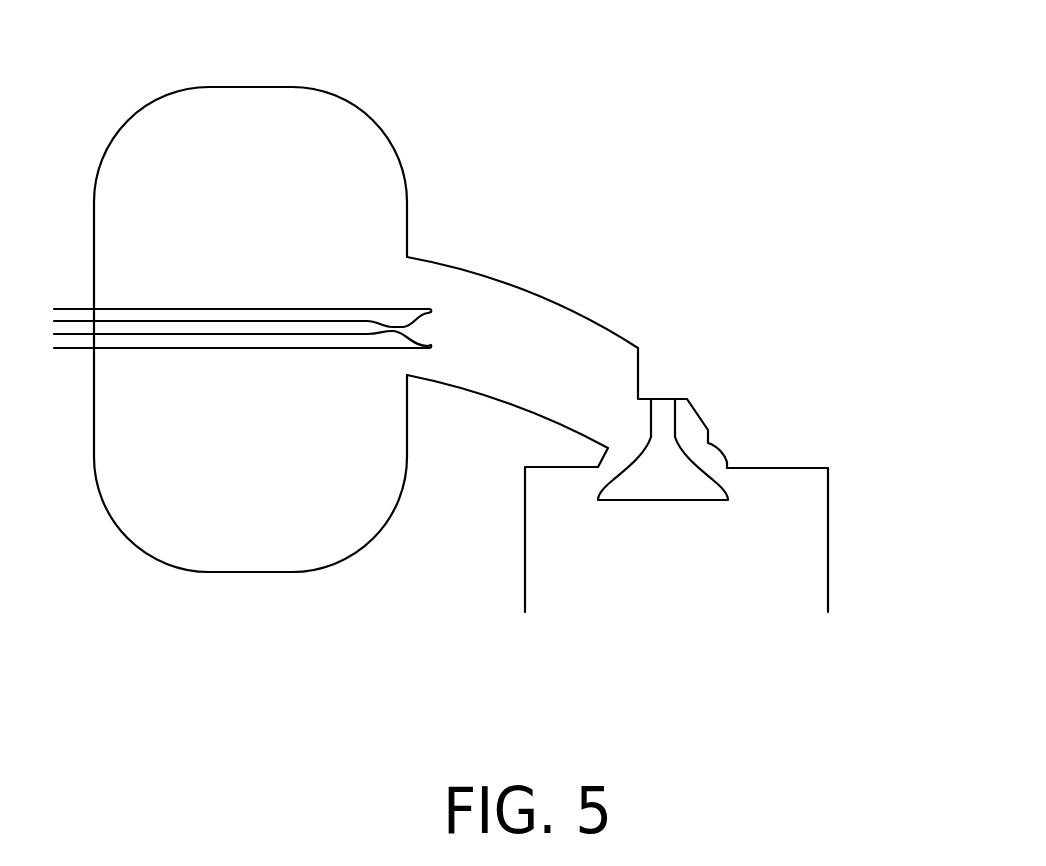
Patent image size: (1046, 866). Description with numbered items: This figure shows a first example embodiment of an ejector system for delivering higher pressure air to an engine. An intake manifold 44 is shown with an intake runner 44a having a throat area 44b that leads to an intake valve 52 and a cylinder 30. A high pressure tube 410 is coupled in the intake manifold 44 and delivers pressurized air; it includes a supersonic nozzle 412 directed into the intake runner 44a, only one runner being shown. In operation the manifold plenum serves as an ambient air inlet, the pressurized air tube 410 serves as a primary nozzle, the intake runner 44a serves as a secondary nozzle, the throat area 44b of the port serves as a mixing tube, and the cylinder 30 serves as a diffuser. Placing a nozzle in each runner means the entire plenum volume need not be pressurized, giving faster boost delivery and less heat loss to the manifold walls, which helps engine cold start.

The intake manifold 44 is at (397, 162).
The intake runner 44a is at (493, 267).
The throat area 44b is at (588, 390).
The high pressure tube 410 is at (190, 318).
The supersonic nozzle 412 is at (392, 366).
The intake valve 52 is at (680, 442).
The cylinder 30 is at (793, 542).